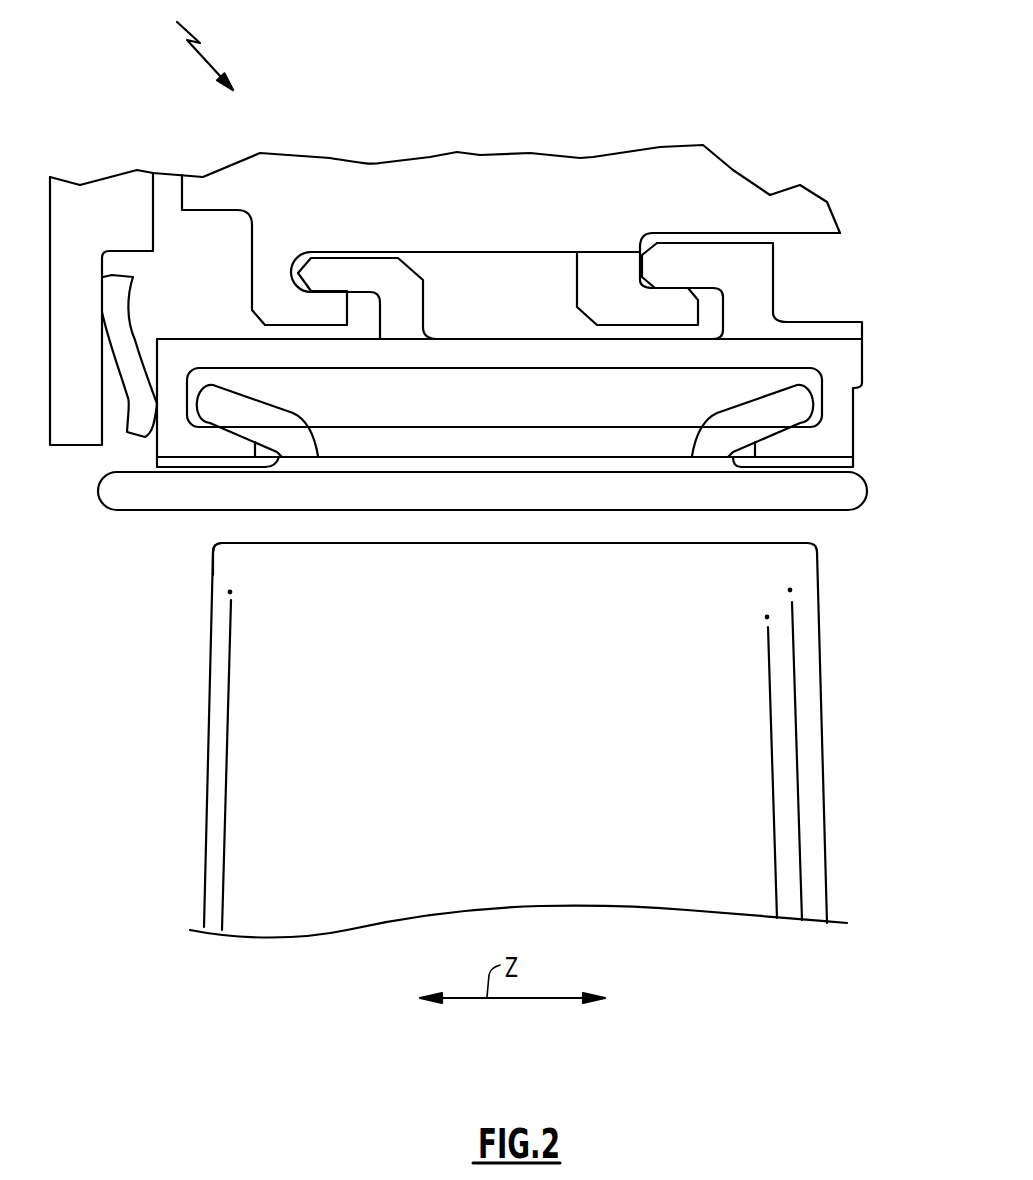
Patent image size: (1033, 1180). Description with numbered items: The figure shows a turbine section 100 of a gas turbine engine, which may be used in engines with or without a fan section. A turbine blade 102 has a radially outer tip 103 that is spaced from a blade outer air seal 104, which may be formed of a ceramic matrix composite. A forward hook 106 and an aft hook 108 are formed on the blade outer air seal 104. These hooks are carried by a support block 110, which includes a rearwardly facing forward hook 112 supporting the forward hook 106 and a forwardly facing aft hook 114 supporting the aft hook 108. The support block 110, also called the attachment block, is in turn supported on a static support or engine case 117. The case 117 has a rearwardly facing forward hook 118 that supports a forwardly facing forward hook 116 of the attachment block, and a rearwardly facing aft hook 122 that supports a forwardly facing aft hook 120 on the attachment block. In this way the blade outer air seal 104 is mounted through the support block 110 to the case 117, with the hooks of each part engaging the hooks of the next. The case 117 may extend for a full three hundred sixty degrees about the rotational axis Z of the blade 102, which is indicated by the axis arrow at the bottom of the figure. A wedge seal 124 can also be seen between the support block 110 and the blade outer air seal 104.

The turbine section 100 is at (181, 48).
The turbine blade 102 is at (205, 760).
The radially outer tip 103 is at (235, 548).
The blade outer air seal 104 is at (123, 493).
The forward hook 106 is at (230, 405).
The aft hook 108 is at (757, 415).
The support block 110 is at (500, 353).
The rearwardly facing forward hook 112 is at (195, 440).
The forwardly facing aft hook 114 is at (842, 438).
The forwardly facing forward hook 116 is at (348, 275).
The engine case 117 is at (410, 207).
The rearwardly facing forward hook 118 is at (293, 312).
The forwardly facing aft hook 120 is at (690, 260).
The rearwardly facing aft hook 122 is at (617, 288).
The wedge seal 124 is at (472, 462).